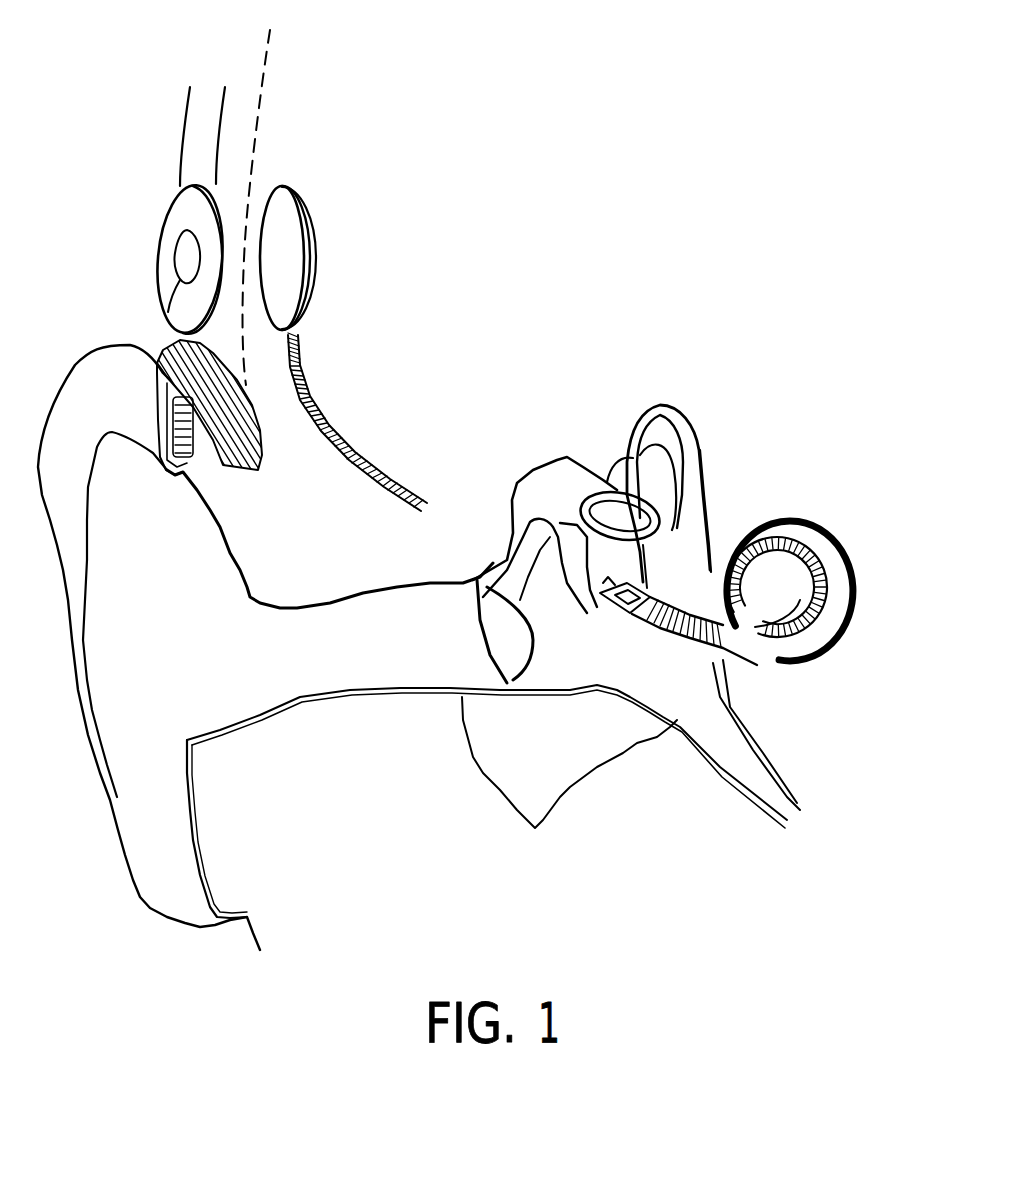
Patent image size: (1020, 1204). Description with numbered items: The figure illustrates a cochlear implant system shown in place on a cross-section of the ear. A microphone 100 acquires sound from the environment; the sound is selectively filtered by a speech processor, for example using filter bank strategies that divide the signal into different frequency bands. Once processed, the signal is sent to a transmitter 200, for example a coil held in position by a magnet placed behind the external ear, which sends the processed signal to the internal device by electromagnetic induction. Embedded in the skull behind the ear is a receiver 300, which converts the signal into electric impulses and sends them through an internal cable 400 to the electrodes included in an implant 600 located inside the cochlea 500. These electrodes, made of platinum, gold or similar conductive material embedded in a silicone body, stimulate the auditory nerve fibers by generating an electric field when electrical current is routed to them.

The microphone 100 is at (260, 460).
The transmitter 200 is at (166, 213).
The receiver 300 is at (317, 240).
The internal cable 400 is at (348, 450).
The cochlea 500 is at (833, 657).
The implant 600 is at (823, 560).